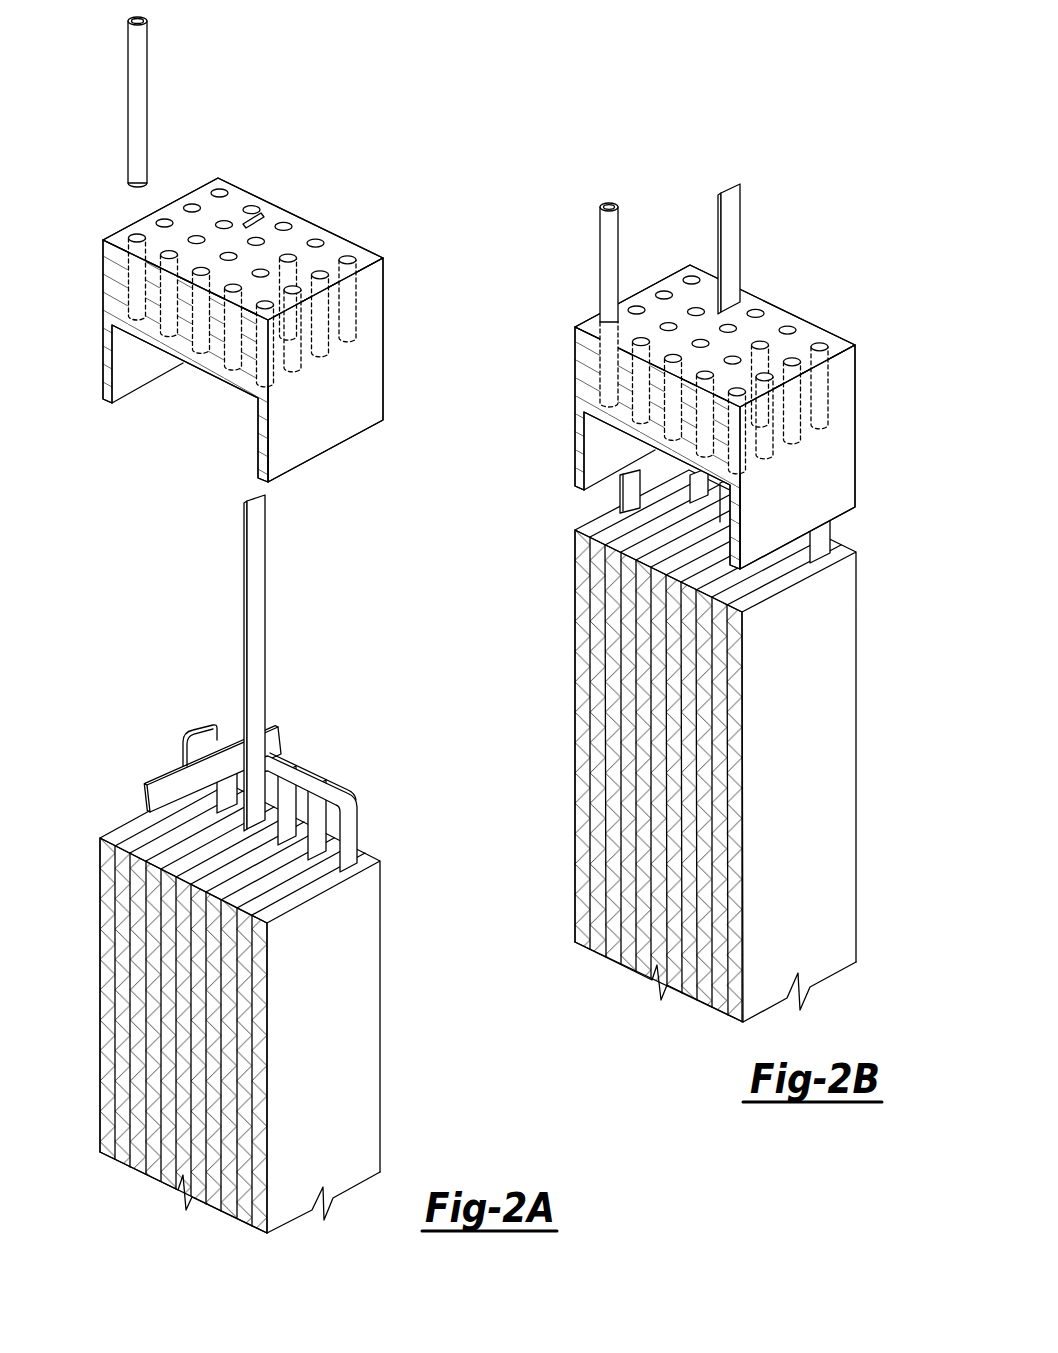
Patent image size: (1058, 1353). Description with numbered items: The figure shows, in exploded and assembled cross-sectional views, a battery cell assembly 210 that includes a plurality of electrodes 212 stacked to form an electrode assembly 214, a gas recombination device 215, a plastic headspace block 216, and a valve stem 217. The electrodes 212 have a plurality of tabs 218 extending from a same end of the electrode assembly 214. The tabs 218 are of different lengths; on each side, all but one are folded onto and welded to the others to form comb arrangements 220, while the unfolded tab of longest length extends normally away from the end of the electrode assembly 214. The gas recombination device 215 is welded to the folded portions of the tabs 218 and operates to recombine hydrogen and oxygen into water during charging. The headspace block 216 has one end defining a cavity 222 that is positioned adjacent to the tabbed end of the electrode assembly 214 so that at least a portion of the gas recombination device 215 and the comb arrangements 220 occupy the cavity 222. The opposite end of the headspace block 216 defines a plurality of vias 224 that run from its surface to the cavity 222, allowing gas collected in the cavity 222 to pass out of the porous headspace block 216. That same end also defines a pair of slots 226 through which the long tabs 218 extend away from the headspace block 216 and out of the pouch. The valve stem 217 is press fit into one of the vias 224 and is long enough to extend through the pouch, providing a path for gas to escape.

In FIG. 2A, the battery cell assembly 210 is at (117, 612).
In FIG. 2B, the battery cell assembly 210 is at (848, 186).
In FIG. 2A, the electrodes 212 is at (245, 969).
In FIG. 2B, the electrodes 212 is at (720, 762).
In FIG. 2A, the electrode assembly 214 is at (250, 1246).
In FIG. 2B, the electrode assembly 214 is at (725, 1035).
In FIG. 2A, the gas recombination device 215 is at (167, 812).
In FIG. 2B, the gas recombination device 215 is at (640, 513).
In FIG. 2A, the plastic headspace block 216 is at (320, 227).
In FIG. 2B, the plastic headspace block 216 is at (792, 316).
In FIG. 2A, the valve stem 217 is at (136, 98).
In FIG. 2B, the valve stem 217 is at (613, 255).
In FIG. 2A, the tabs 218 is at (428, 869).
In FIG. 2B, the tabs 218 is at (825, 550).
In FIG. 2A, the comb arrangements 220 is at (305, 756).
In FIG. 2A, the cavity 222 is at (247, 302).
In FIG. 2B, the cavity 222 is at (686, 381).
In FIG. 2A, the vias 224 is at (287, 256).
In FIG. 2B, the vias 224 is at (760, 343).
In FIG. 2A, the slots 226 is at (251, 207).